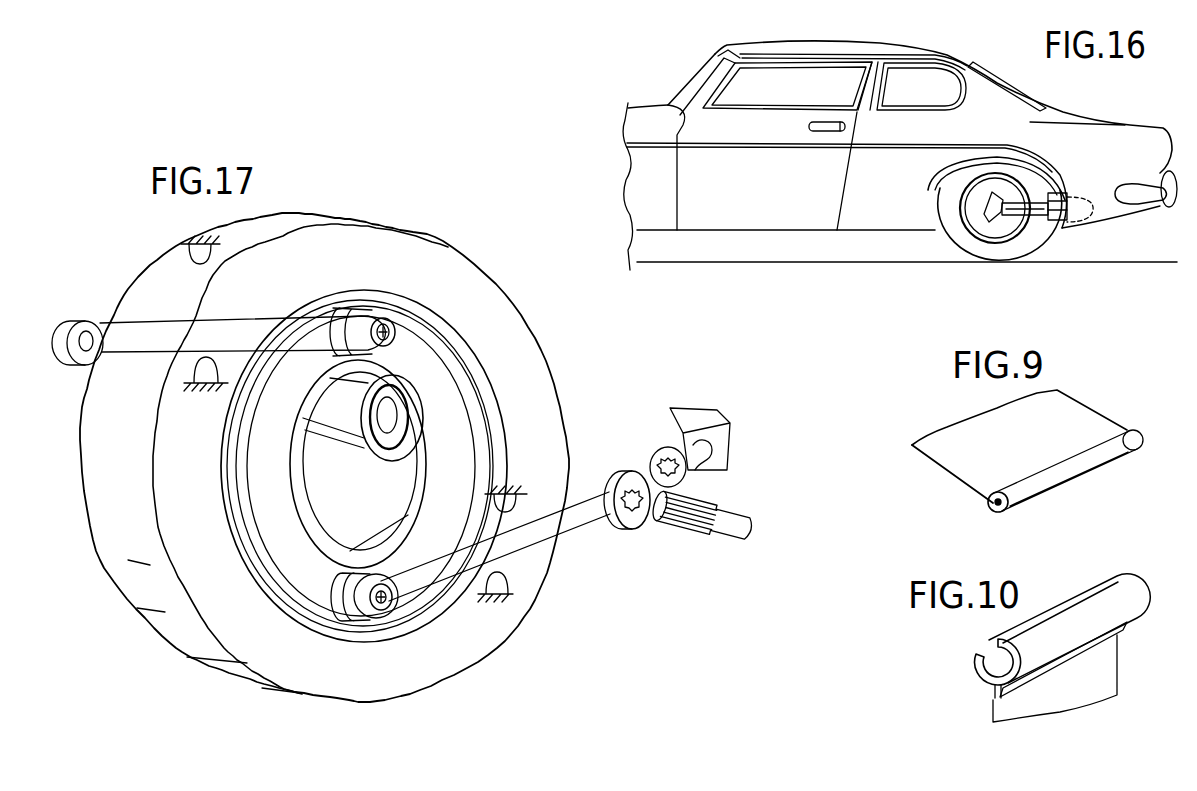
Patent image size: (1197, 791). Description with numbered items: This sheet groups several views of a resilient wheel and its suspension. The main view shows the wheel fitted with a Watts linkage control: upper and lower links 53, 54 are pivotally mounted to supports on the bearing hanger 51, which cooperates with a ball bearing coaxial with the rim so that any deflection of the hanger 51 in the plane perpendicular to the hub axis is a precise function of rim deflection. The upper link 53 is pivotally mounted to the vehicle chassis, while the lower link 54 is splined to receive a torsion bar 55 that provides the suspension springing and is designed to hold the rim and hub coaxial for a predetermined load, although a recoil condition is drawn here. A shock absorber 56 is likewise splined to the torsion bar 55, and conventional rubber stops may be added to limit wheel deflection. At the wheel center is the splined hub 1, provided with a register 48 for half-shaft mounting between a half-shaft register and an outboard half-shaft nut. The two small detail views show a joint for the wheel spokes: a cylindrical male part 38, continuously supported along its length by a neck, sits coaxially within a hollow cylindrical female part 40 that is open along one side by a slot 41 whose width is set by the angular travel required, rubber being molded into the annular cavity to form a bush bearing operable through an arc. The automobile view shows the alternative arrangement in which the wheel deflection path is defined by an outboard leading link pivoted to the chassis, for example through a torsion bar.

In FIG. 17, the hub 1 is at (345, 432).
In FIG. 17, the register 48 is at (414, 394).
In FIG. 17, the bearing hanger 51 is at (250, 452).
In FIG. 17, the upper link 53 is at (157, 330).
In FIG. 17, the lower link 54 is at (578, 520).
In FIG. 17, the torsion bar 55 is at (734, 520).
In FIG. 17, the shock absorber 56 is at (695, 427).
In FIG. 9, the male part 38 is at (1071, 474).
In FIG. 10, the female part 40 is at (1026, 635).
In FIG. 10, the slot 41 is at (970, 654).